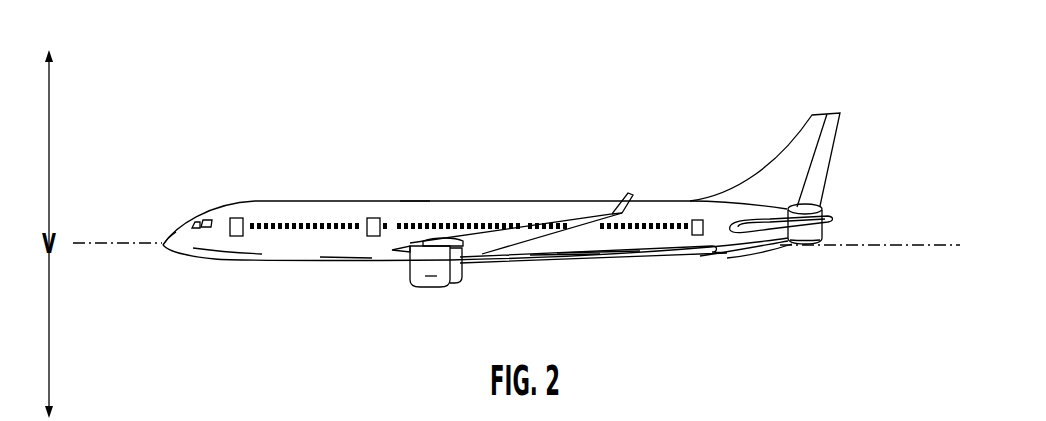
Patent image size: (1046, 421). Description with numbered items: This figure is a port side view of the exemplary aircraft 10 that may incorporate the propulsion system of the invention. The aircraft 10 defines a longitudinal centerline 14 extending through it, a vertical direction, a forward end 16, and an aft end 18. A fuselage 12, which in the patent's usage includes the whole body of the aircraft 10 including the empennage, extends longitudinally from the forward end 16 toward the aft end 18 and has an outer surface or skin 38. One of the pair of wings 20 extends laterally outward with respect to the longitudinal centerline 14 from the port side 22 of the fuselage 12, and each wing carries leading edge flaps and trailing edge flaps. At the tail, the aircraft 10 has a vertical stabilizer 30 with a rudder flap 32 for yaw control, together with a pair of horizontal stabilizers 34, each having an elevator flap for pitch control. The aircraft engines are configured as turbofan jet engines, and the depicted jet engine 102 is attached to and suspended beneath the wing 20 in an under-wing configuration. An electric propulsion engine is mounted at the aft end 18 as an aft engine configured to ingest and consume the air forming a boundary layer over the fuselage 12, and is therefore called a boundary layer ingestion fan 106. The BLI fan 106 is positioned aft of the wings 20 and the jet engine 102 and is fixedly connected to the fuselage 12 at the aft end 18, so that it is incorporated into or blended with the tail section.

The aircraft 10 is at (215, 149).
The fuselage 12 is at (260, 254).
The longitudinal centerline 14 is at (85, 245).
The forward end 16 is at (168, 257).
The aft end 18 is at (755, 260).
The wings 20 is at (560, 232).
The port side 22 is at (621, 255).
The vertical stabilizer 30 is at (788, 148).
The rudder flap 32 is at (831, 147).
The horizontal stabilizers 34 is at (789, 247).
The outer surface or skin 38 is at (413, 200).
The turbofan jet engine 102 is at (420, 286).
The boundary layer ingestion fan 106 is at (817, 200).